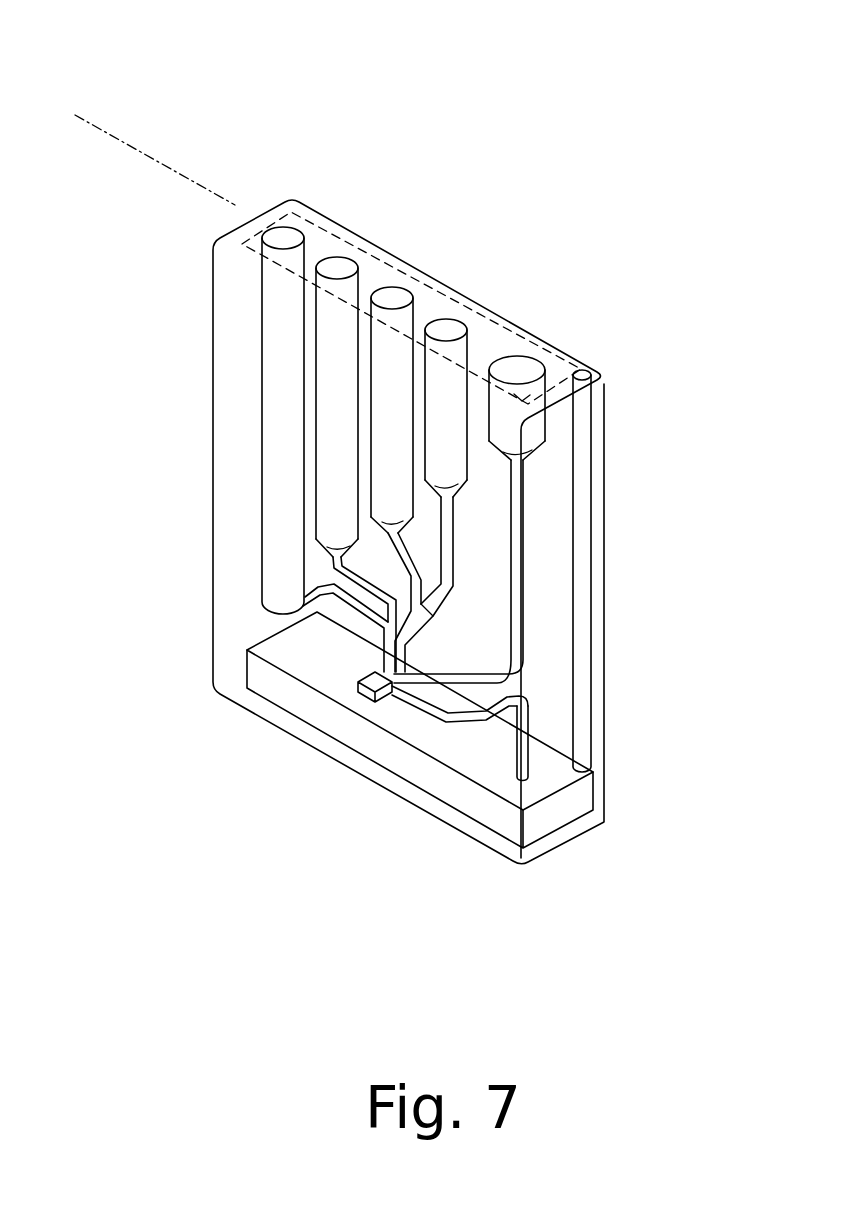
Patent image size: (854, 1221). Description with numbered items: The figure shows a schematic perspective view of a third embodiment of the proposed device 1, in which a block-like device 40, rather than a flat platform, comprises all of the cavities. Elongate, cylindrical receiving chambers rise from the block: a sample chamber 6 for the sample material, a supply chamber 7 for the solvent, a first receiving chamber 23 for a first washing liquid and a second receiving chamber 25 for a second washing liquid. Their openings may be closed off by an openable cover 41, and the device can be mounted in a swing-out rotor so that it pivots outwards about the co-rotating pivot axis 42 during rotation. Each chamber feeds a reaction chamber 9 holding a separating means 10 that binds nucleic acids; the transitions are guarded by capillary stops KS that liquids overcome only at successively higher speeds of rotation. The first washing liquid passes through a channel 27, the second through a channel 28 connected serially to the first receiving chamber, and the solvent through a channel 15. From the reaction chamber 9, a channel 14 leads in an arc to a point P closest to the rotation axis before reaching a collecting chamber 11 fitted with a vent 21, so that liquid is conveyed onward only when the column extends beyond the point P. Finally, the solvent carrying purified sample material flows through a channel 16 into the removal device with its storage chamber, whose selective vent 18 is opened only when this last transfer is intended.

The device 1 is at (446, 276).
The sample chamber 6 is at (470, 548).
The supply chamber 7 is at (548, 420).
The reaction chamber 9 is at (367, 692).
The separating means 10 is at (358, 680).
The collecting chamber 11 is at (442, 776).
The channel 14 is at (530, 765).
The channel 15 is at (455, 548).
The channel 16 is at (380, 614).
The vent 18 is at (277, 225).
The vent 21 is at (598, 372).
The first receiving chamber 23 is at (545, 452).
The second receiving chamber 25 is at (530, 450).
The channel 27 is at (520, 668).
The channel 28 is at (440, 612).
The device 40 is at (212, 418).
The cover 41 is at (518, 332).
The pivot axis 42 is at (142, 150).
The capillary stop KS is at (330, 552).
The point P is at (300, 582).